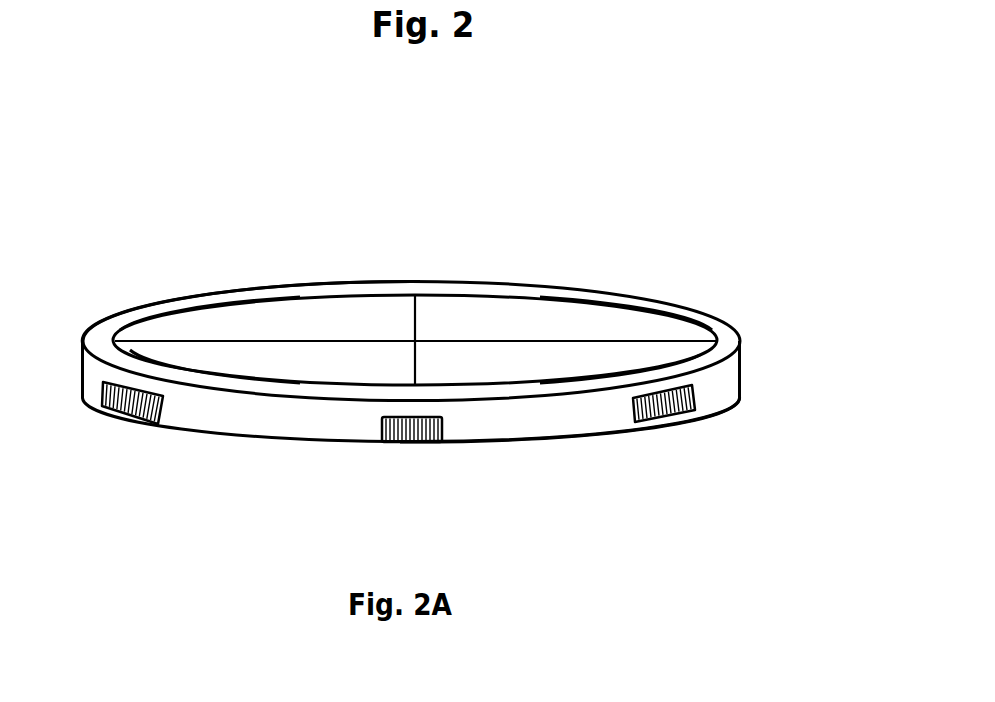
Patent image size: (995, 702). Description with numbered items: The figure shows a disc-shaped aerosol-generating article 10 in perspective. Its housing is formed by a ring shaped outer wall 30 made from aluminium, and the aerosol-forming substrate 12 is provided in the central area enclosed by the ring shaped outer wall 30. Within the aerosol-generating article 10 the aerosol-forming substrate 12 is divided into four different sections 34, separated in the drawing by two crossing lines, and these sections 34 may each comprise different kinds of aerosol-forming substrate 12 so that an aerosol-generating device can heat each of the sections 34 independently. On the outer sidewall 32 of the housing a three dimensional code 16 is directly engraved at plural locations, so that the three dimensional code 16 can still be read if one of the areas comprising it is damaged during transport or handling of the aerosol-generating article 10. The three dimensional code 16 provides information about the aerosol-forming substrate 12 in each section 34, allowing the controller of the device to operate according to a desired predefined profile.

The aerosol-generating article 10 is at (677, 223).
The aerosol-forming substrate 12 is at (300, 327).
The three dimensional code 16 is at (132, 418).
The ring shaped outer wall 30 is at (103, 334).
The outer sidewall 32 is at (585, 422).
The sections 34 is at (205, 323).